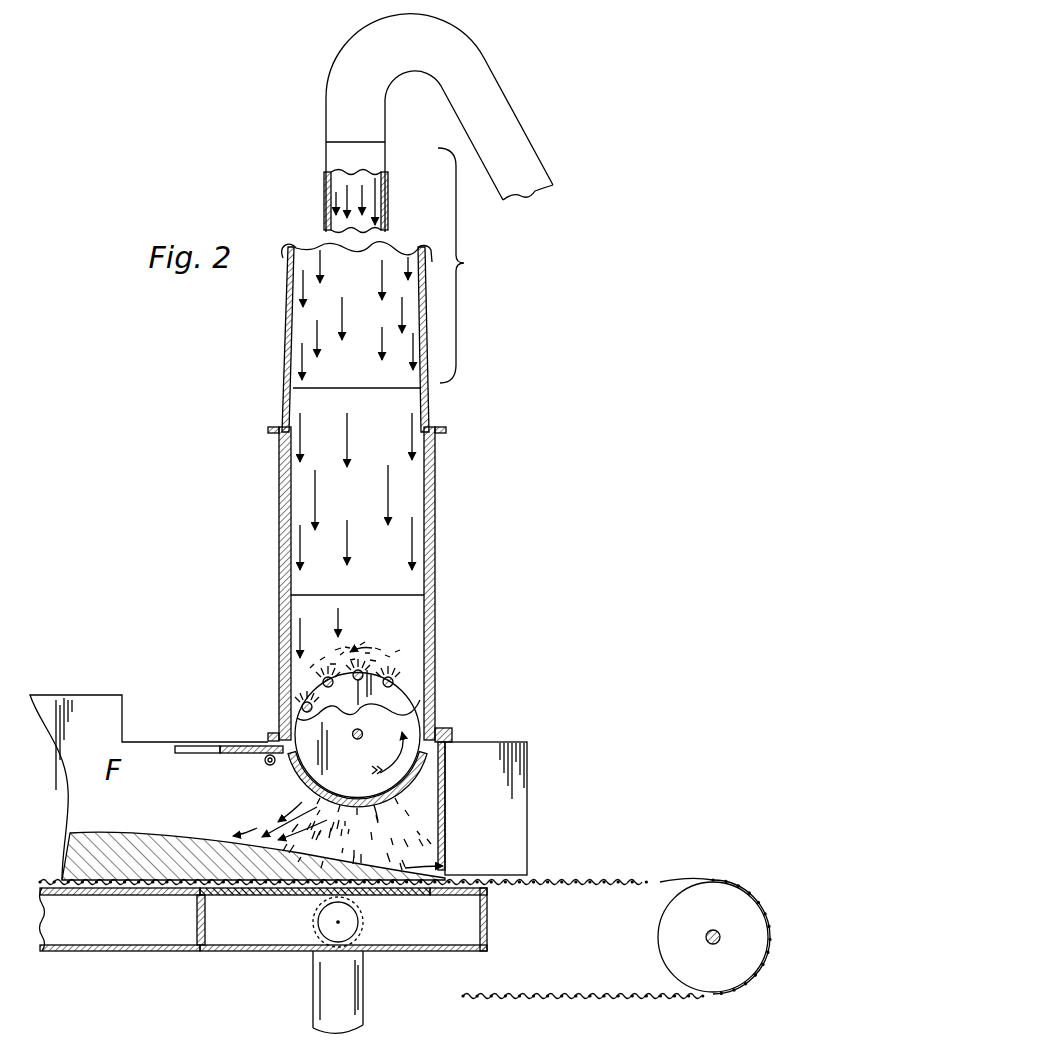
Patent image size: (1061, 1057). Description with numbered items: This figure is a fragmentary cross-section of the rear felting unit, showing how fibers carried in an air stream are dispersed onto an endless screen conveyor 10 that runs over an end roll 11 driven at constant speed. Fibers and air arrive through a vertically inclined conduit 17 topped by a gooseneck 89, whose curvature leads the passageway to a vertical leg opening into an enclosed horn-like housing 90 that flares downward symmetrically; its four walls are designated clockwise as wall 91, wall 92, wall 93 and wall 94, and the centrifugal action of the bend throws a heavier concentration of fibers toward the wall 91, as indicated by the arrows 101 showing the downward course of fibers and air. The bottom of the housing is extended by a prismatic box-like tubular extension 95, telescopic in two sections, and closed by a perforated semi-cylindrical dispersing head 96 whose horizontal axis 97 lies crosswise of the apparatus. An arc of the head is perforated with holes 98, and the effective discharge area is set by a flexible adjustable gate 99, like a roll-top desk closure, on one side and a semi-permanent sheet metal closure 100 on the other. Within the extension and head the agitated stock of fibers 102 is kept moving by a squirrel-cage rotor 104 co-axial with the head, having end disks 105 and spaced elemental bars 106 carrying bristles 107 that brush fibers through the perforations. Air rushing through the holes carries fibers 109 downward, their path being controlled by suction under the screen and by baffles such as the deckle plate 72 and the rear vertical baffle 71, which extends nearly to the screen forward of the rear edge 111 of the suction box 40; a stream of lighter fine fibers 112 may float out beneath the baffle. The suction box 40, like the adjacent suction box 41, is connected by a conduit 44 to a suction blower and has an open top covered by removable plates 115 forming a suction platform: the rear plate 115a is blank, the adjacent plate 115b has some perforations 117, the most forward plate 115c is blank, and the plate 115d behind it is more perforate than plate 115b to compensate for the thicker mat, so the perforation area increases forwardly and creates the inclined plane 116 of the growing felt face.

The endless screen conveyor 10 is at (612, 880).
The end roll 11 is at (712, 898).
The conduit 17 is at (530, 148).
The suction box 40 is at (268, 951).
The suction box 41 is at (125, 955).
The conduit 44 is at (320, 1007).
The end baffle 71 is at (445, 786).
The deckle plate 72 is at (516, 742).
The gooseneck 89 is at (422, 62).
The horn-like housing 90 is at (471, 265).
The housing wall 91 is at (325, 212).
The housing wall 92 is at (305, 324).
The housing wall 93 is at (390, 216).
The housing wall 94 is at (330, 157).
The tubular extension 95 is at (437, 601).
The dispersing head 96 is at (398, 806).
The horizontal axis 97 is at (354, 739).
The holes 98 is at (382, 812).
The flexible adjustable gate 99 is at (285, 760).
The semi-permanent closure 100 is at (427, 775).
The arrows 101 is at (380, 345).
The agitated fiber stock 102 is at (352, 641).
The squirrel-cage rotor 104 is at (405, 717).
The end disks 105 is at (420, 703).
The elemental bars 106 is at (358, 713).
The bristles 107 is at (302, 702).
The fibers 109 is at (392, 845).
The rear edge 111 is at (488, 920).
The stream of fine fibers 112 is at (447, 870).
The removable plates 115 is at (128, 897).
The rear plate 115a is at (465, 897).
The perforate plate 115b is at (443, 897).
The most forward plate 115c is at (222, 900).
The perforate plate 115d is at (262, 898).
The inclined plane 116 is at (315, 856).
The perforations 117 is at (417, 896).